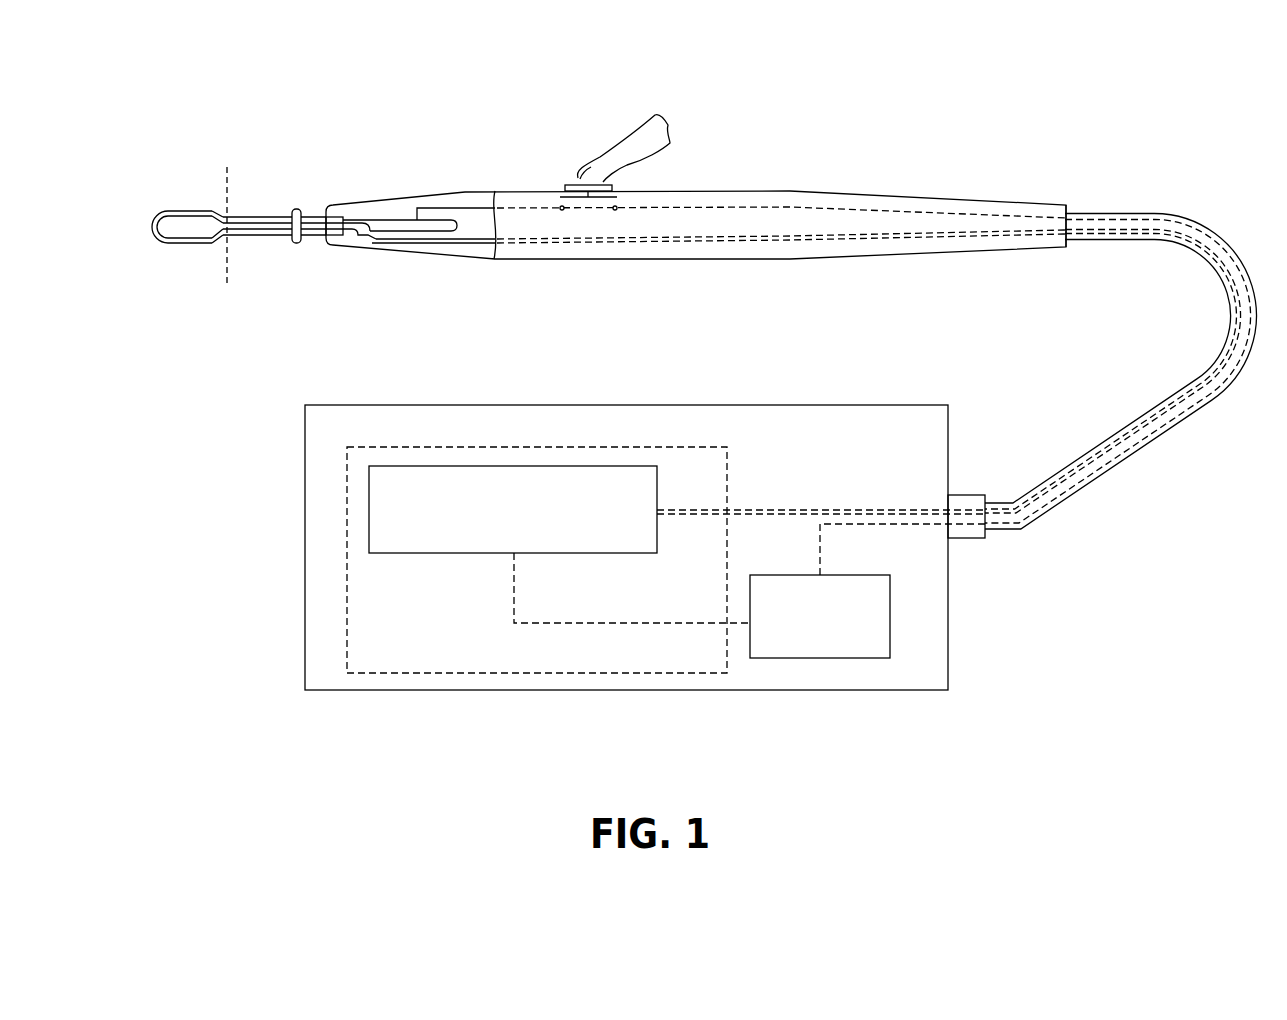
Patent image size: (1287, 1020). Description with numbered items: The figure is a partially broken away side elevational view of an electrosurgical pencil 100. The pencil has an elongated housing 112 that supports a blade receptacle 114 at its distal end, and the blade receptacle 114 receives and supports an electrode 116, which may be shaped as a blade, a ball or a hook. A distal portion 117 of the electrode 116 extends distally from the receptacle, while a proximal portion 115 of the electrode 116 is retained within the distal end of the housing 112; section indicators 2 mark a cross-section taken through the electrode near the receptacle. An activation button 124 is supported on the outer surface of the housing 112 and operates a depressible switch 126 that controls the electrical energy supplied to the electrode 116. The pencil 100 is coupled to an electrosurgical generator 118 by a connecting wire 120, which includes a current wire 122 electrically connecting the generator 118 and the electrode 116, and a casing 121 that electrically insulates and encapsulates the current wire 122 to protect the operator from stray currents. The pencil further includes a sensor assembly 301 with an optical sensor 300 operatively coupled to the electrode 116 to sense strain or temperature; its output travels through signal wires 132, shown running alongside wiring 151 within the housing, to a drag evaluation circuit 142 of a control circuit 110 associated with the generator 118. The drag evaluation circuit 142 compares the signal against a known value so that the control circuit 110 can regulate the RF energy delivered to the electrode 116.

The electrosurgical pencil 100 is at (947, 121).
The section line 2- 2 is at (227, 166).
The control circuit 110 is at (385, 448).
The elongated housing 112 is at (877, 194).
The blade receptacle 114 is at (302, 215).
The proximal portion of the electrode 115 is at (411, 214).
The electrode 116 is at (235, 215).
The distal portion of the electrode 117 is at (158, 211).
The electrosurgical generator 118 is at (925, 404).
The connecting wire 120 is at (1113, 208).
The casing 121 is at (1123, 460).
The current wire 122 is at (970, 215).
The activation button 124 is at (572, 177).
The depressible switch 126 is at (619, 205).
The signal wires 132 is at (407, 247).
The drag evaluation circuit 142 is at (492, 465).
The sensor wires 151 is at (715, 242).
The optical sensor 300 is at (245, 234).
The sensor assembly 301 is at (313, 247).